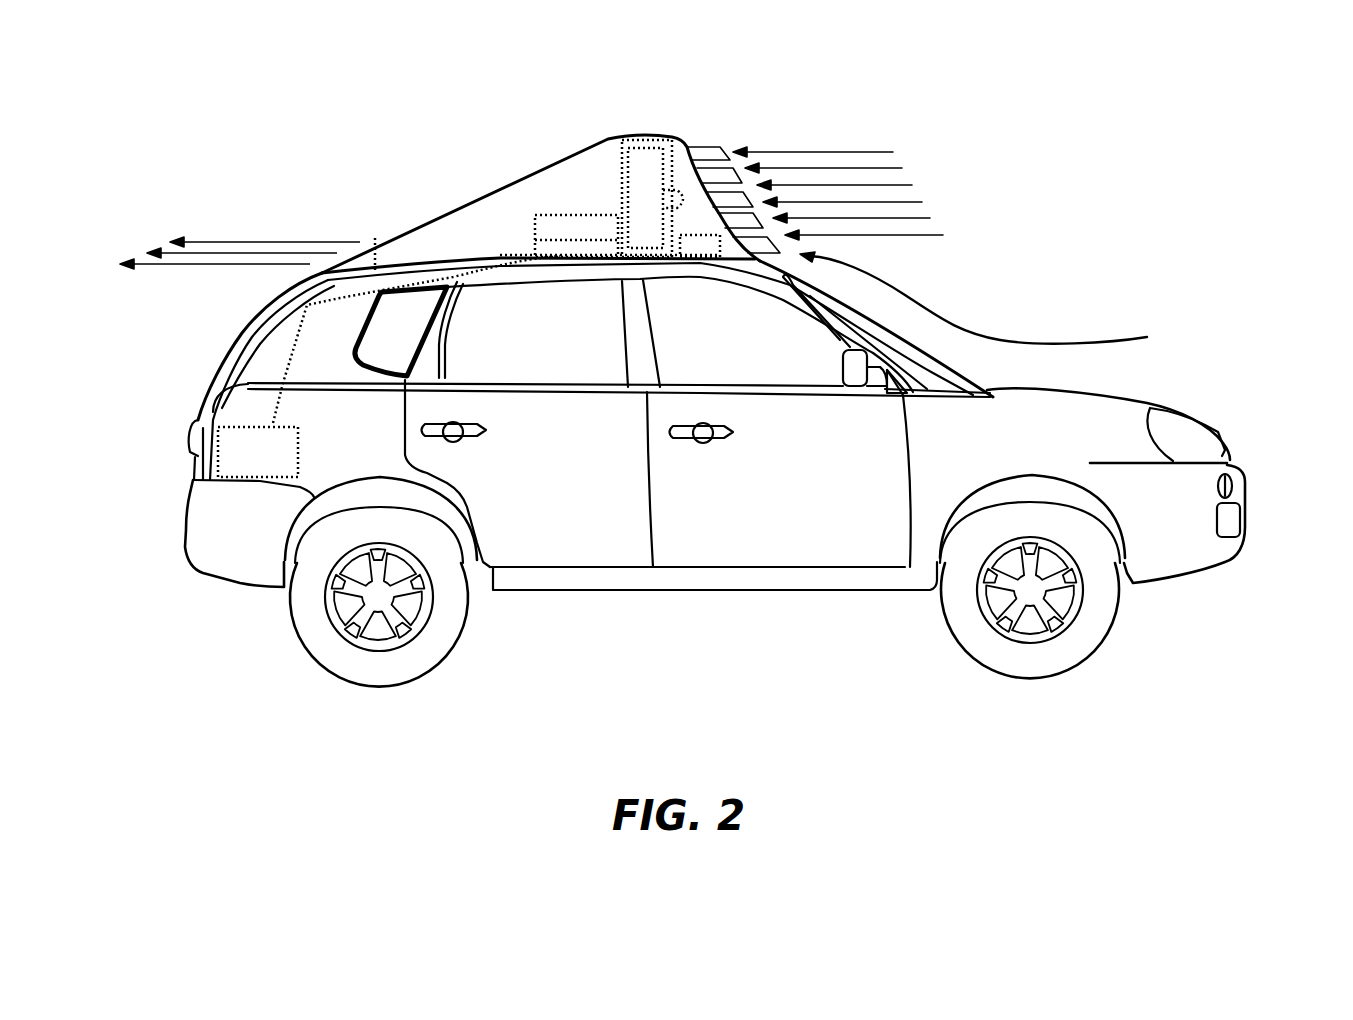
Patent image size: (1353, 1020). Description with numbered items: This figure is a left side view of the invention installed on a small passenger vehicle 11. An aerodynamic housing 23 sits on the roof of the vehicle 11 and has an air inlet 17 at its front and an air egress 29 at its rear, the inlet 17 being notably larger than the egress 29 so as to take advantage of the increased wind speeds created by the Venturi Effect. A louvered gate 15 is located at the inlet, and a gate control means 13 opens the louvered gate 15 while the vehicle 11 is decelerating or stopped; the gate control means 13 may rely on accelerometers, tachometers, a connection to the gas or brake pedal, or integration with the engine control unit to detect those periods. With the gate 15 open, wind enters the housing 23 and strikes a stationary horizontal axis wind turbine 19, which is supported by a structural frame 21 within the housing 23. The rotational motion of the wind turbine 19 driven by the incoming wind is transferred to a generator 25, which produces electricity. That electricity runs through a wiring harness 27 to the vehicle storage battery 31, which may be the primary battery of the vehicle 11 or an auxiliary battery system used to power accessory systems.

The small passenger vehicle 11 is at (1113, 425).
The gate control means 13 is at (707, 253).
The louvered gate 15 is at (707, 153).
The air inlet 17 is at (687, 173).
The stationary horizontal axis wind turbine 19 is at (648, 153).
The structural frame 21 is at (620, 180).
The aerodynamic housing 23 is at (533, 172).
The generator 25 is at (533, 213).
The wiring harness 27 is at (456, 283).
The air egress 29 is at (375, 238).
The vehicle storage battery 31 is at (230, 456).